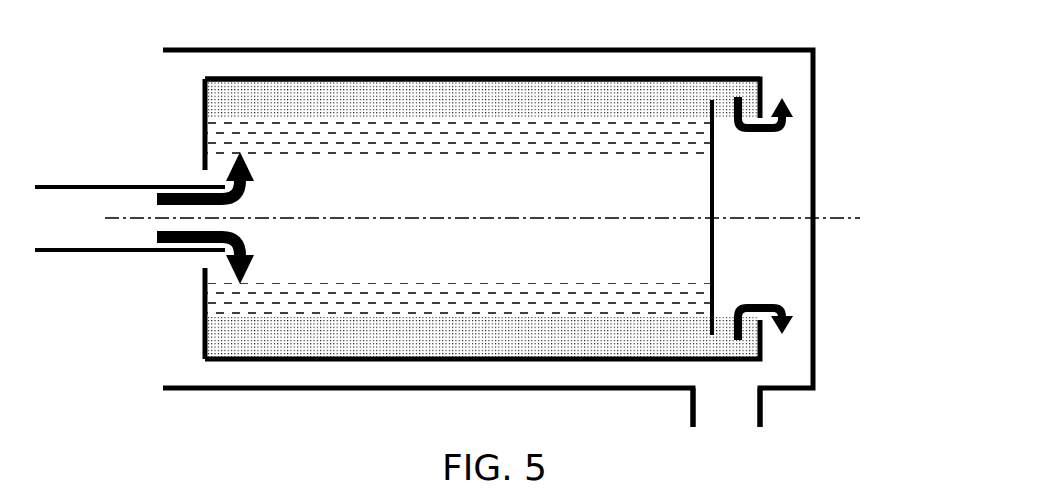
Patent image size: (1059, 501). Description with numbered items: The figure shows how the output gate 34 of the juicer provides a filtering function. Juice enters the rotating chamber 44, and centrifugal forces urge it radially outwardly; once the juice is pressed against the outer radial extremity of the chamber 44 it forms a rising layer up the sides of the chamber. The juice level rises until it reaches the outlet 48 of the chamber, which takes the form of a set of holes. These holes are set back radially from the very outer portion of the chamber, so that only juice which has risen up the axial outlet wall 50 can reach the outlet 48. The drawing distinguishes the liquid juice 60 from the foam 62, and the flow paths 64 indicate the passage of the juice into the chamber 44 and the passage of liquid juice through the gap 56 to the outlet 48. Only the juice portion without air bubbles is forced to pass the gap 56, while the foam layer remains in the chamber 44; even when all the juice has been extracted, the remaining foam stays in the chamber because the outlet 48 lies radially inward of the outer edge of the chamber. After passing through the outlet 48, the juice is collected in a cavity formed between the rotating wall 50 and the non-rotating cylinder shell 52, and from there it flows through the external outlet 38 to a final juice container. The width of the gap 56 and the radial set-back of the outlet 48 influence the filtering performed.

The output gate 34 is at (712, 228).
The external outlet 38 is at (728, 417).
The chamber 44 is at (533, 207).
The outlet 48 is at (778, 256).
The axial outlet wall 50 is at (763, 342).
The non-rotating cylinder shell 52 is at (813, 50).
The gap 56 is at (712, 95).
The liquid juice 60 is at (252, 111).
The foam 62 is at (345, 146).
The flow paths 64 is at (250, 241).